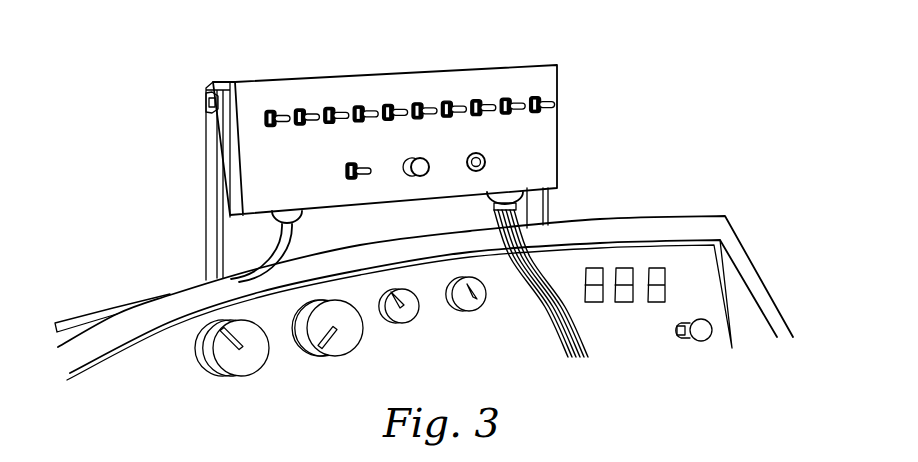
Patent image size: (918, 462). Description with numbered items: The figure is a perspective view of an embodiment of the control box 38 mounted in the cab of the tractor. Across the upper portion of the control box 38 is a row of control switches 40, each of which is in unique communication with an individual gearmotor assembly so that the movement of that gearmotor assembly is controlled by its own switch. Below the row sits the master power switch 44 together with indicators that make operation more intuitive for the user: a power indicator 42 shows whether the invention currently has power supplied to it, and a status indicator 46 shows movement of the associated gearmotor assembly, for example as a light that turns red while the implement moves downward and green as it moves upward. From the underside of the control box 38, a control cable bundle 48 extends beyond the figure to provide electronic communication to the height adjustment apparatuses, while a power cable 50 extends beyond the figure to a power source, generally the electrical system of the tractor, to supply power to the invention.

The control box 38 is at (510, 73).
The control switches 40 is at (333, 104).
The power indicator 42 is at (418, 170).
The master power switch 44 is at (344, 172).
The status indicator 46 is at (488, 163).
The control cable bundle 48 is at (533, 287).
The power cable 50 is at (283, 249).